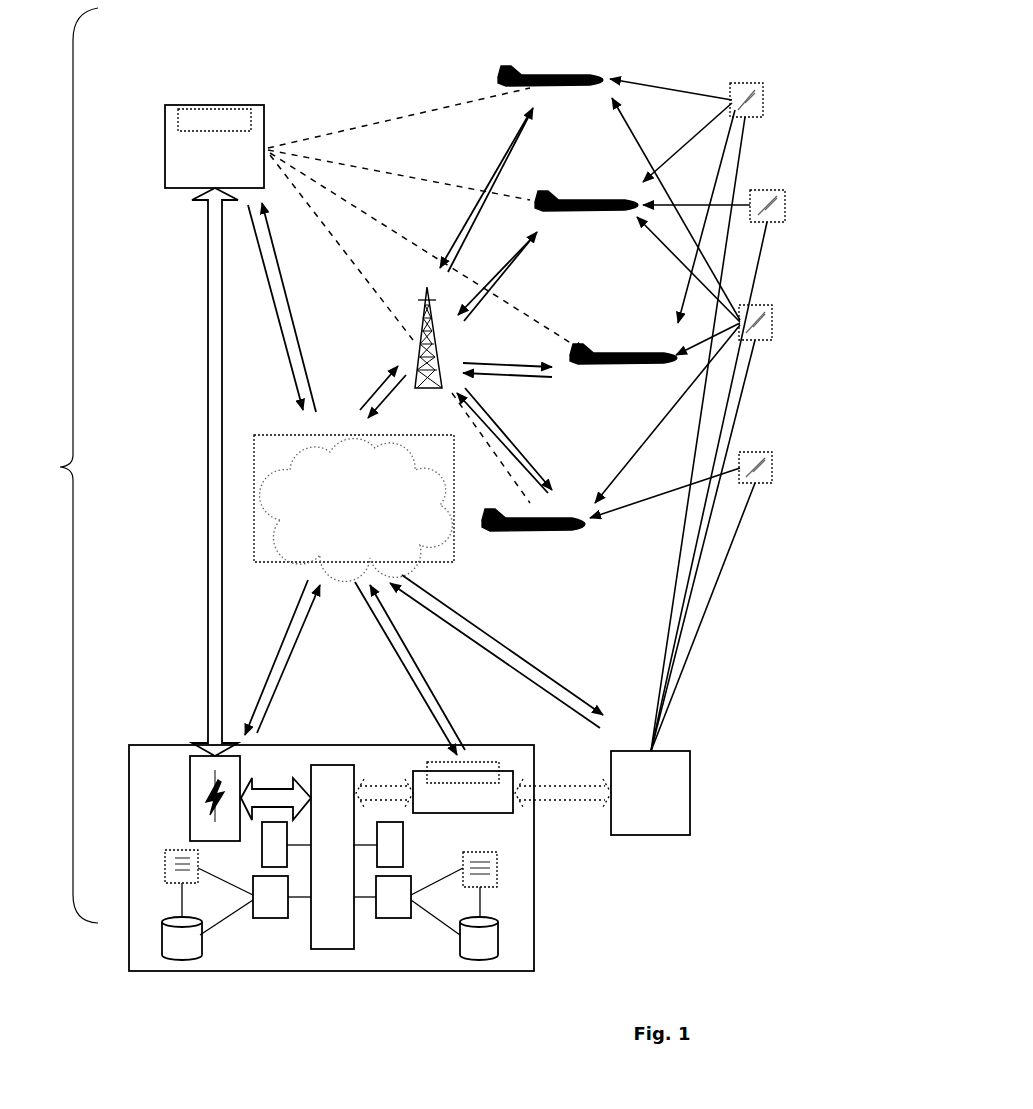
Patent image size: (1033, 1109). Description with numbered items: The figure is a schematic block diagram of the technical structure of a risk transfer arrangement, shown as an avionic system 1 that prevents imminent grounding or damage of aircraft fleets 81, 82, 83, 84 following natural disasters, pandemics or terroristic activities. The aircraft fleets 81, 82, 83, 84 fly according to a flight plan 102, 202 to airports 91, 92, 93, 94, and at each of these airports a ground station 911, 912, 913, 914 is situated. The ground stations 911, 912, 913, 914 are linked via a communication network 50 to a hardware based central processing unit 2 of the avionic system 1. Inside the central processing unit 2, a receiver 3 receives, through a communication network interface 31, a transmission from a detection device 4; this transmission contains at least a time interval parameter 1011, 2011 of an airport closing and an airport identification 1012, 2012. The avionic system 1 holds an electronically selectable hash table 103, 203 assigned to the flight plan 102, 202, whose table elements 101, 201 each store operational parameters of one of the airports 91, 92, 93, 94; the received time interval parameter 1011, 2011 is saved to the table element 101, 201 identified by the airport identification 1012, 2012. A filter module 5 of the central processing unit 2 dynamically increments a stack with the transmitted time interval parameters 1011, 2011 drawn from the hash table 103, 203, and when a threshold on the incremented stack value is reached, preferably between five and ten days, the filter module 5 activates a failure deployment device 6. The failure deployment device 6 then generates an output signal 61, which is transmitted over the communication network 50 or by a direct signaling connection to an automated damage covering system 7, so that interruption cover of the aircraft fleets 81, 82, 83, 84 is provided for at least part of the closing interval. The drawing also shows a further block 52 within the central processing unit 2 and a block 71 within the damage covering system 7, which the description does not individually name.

The avionic system 1 is at (60, 466).
The central processing unit 2 is at (524, 924).
The receiver 3 is at (463, 792).
The communication network interface 31 is at (463, 772).
The detection device 4 is at (650, 793).
The filter module 5 is at (332, 857).
The communication network 50 is at (354, 508).
The second server module 52 is at (378, 844).
The failure deployment device 6 is at (230, 772).
The output signal 61 is at (210, 798).
The automated damage covering system 7 is at (214, 146).
The display unit 71 is at (214, 120).
The aircraft fleet 81 is at (570, 78).
The aircraft fleet 82 is at (610, 213).
The aircraft fleet 83 is at (608, 368).
The aircraft fleet 84 is at (525, 532).
The airport 91 is at (743, 82).
The ground station 911 is at (755, 105).
The airport 92 is at (767, 190).
The ground station 912 is at (778, 212).
The airport 93 is at (757, 305).
The ground station 913 is at (762, 328).
The airport 94 is at (755, 452).
The ground station 914 is at (762, 475).
The table element 101 is at (479, 938).
The flight plan 102 is at (480, 884).
The hash table 103 is at (408, 901).
The time interval parameter 1011 is at (473, 858).
The airport identification 1012 is at (487, 858).
The table element 201 is at (182, 938).
The flight plan 202 is at (181, 883).
The hash table 203 is at (254, 901).
The time interval parameter 2011 is at (178, 858).
The airport identification 2012 is at (188, 858).